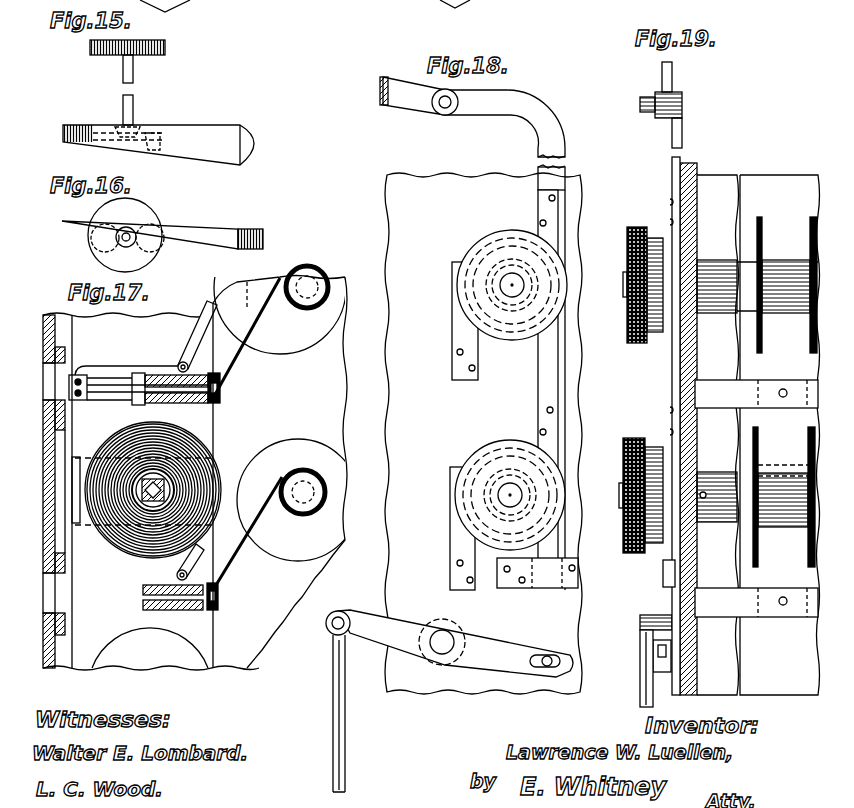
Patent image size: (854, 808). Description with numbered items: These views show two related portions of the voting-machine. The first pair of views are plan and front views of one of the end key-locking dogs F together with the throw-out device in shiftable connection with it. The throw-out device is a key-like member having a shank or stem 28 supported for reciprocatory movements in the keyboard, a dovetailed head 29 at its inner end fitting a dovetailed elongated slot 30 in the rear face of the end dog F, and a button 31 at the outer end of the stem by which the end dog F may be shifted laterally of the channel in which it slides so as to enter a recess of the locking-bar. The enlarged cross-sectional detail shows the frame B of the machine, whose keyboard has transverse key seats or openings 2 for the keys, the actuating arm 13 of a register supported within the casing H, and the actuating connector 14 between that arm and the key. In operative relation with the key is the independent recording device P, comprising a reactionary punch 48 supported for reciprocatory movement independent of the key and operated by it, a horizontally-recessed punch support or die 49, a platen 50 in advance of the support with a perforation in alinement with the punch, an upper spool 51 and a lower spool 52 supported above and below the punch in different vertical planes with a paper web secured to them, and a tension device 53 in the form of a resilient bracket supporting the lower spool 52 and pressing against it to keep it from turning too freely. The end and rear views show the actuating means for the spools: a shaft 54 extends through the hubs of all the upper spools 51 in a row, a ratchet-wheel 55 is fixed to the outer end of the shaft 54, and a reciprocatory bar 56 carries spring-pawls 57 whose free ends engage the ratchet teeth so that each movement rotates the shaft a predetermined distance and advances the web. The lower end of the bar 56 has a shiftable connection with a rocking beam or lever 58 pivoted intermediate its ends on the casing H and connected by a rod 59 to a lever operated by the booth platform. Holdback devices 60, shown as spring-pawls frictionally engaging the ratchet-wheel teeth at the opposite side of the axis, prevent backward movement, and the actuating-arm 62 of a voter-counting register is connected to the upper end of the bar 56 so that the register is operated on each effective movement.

In FIG. 17, the key seats or openings 2 is at (48, 381).
In FIG. 17, the actuating arm 13 is at (178, 362).
In FIG. 17, the actuating connector 14 is at (88, 368).
In FIG. 15, the shank or stem 28 is at (134, 107).
In FIG. 15, the dovetailed head 29 is at (141, 135).
In FIG. 16, the dovetailed head 29 is at (112, 242).
In FIG. 15, the dovetailed elongated slot 30 is at (156, 146).
In FIG. 16, the dovetailed elongated slot 30 is at (166, 251).
In FIG. 15, the button 31 is at (166, 45).
In FIG. 16, the button 31 is at (150, 216).
In FIG. 17, the reactionary punch 48 is at (106, 385).
In FIG. 17, the punch support or die 49 is at (160, 404).
In FIG. 17, the platen 50 is at (221, 389).
In FIG. 19, the platen 50 is at (787, 372).
In FIG. 17, the upper spool 51 is at (288, 343).
In FIG. 19, the upper spool 51 is at (762, 240).
In FIG. 17, the lower spool 52 is at (169, 479).
In FIG. 17, the tension device 53 is at (86, 458).
In FIG. 17, the spool-supporting shaft 54 is at (322, 269).
In FIG. 18, the ratchet-wheel 55 is at (490, 238).
In FIG. 19, the ratchet-wheel 55 is at (655, 236).
In FIG. 18, the reciprocatory bar 56 is at (556, 177).
In FIG. 19, the reciprocatory bar 56 is at (680, 138).
In FIG. 18, the spring-pawls 57 is at (554, 228).
In FIG. 19, the spring-pawls 57 is at (668, 341).
In FIG. 18, the rocking beam or lever 58 is at (492, 663).
In FIG. 19, the rocking beam or lever 58 is at (663, 646).
In FIG. 18, the rod 59 is at (346, 752).
In FIG. 19, the rod 59 is at (650, 690).
In FIG. 18, the holdback device 60 is at (458, 328).
In FIG. 19, the holdback device 60 is at (663, 549).
In FIG. 18, the actuating-arm 62 is at (398, 85).
In FIG. 15, the end dog F is at (226, 135).
In FIG. 16, the end dog F is at (206, 233).
In FIG. 17, the independent recording device P is at (280, 472).
In FIG. 17, the casing H is at (255, 633).
In FIG. 18, the casing H is at (450, 182).
In FIG. 19, the casing H is at (680, 394).
In FIG. 17, the frame B is at (45, 648).